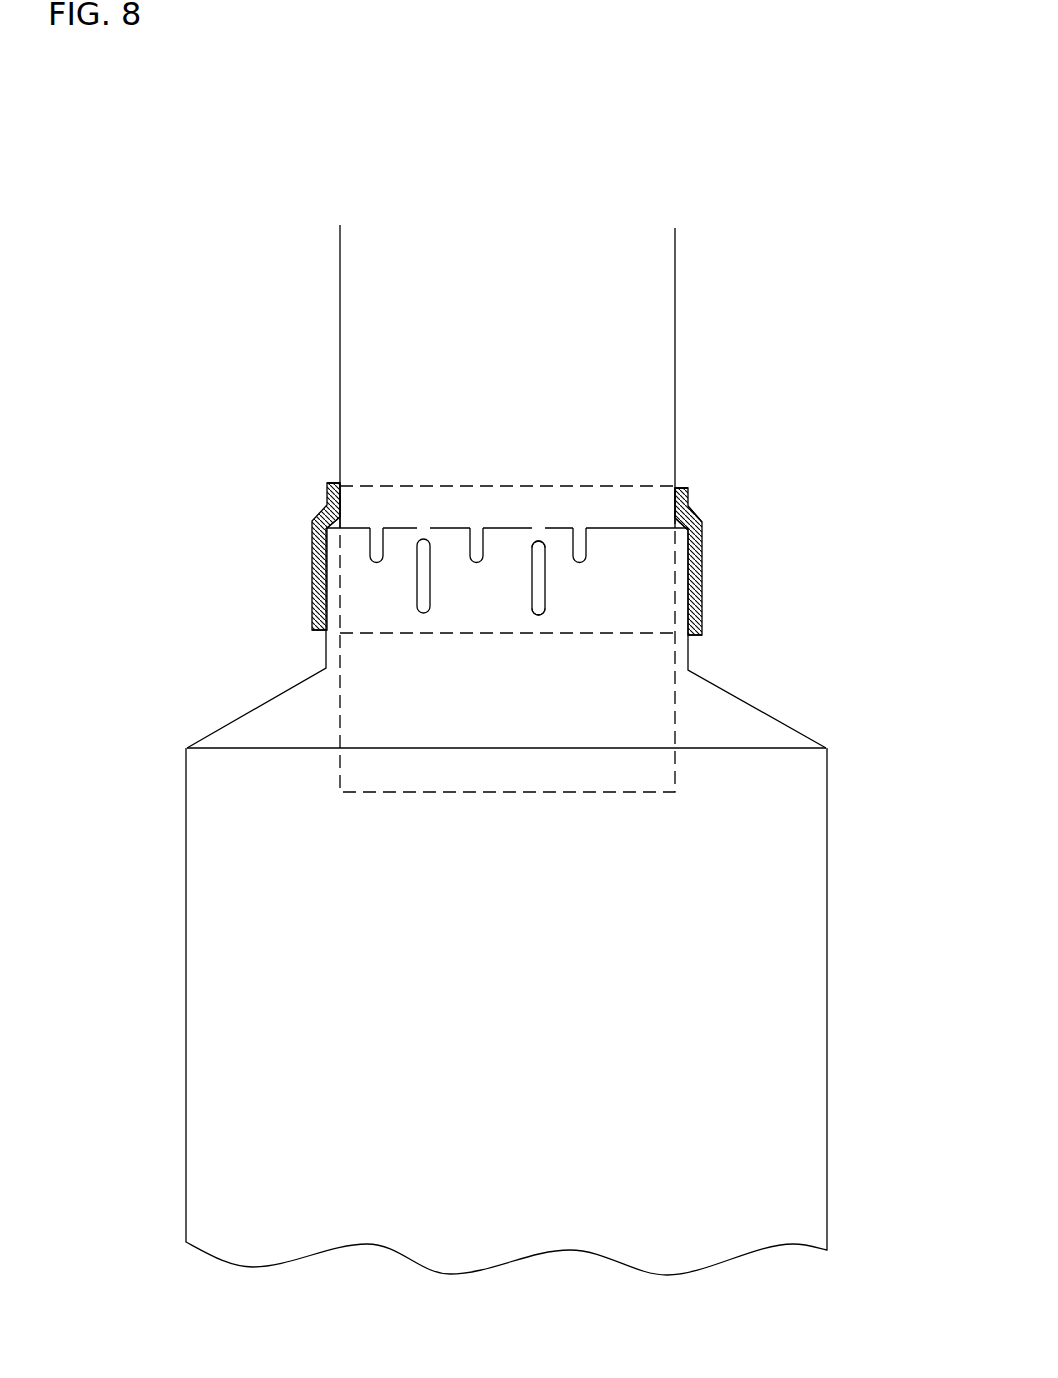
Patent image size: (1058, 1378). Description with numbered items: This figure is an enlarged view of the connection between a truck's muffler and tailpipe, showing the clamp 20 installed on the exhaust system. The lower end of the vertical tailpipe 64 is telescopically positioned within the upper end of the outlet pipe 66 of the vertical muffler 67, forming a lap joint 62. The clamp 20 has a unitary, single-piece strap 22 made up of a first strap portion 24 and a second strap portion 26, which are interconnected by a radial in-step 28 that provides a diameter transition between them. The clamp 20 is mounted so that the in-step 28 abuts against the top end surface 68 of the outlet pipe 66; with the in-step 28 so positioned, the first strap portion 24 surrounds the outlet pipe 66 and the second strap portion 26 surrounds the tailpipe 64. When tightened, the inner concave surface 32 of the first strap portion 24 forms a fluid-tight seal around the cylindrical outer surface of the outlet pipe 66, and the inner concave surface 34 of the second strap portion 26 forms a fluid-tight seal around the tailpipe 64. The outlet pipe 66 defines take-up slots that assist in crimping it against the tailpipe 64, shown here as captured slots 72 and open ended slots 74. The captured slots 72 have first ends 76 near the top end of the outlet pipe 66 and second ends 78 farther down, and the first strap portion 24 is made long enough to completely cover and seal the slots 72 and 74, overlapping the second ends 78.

The clamp 20 is at (487, 550).
The strap 22 is at (702, 533).
The first strap portion 24 is at (702, 580).
The second strap portion 26 is at (688, 498).
The radial in-step 28 is at (327, 513).
The inner concave surface 32 is at (327, 608).
The inner concave surface 34 is at (338, 497).
The lap joint 62 is at (320, 643).
The vertical tailpipe 64 is at (675, 375).
The outlet pipe 66 is at (688, 648).
The vertical muffler 67 is at (826, 963).
The top end surface 68 is at (332, 502).
The captured slots 72 is at (545, 590).
The open ended slots 74 is at (375, 561).
The first ends 76 is at (539, 540).
The second ends 78 is at (535, 615).